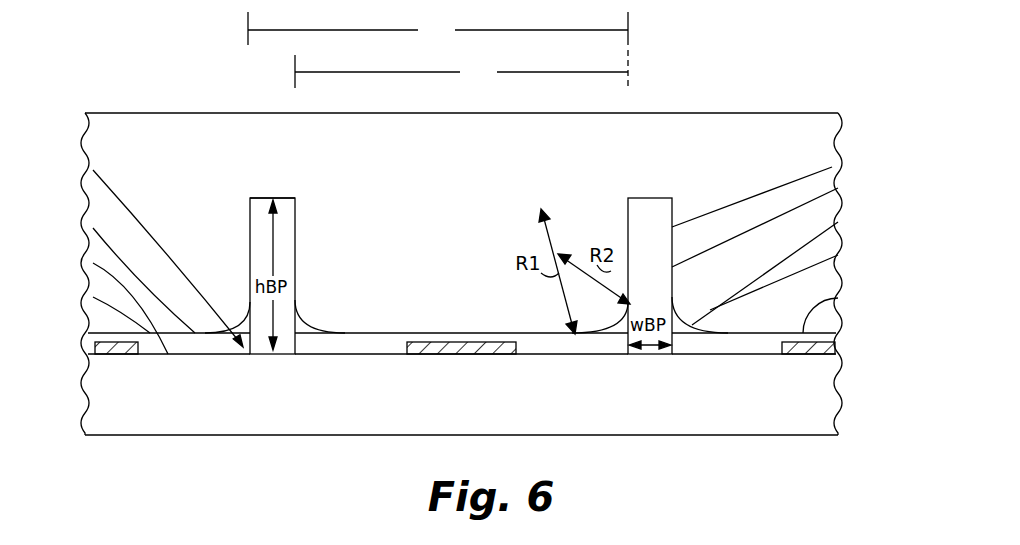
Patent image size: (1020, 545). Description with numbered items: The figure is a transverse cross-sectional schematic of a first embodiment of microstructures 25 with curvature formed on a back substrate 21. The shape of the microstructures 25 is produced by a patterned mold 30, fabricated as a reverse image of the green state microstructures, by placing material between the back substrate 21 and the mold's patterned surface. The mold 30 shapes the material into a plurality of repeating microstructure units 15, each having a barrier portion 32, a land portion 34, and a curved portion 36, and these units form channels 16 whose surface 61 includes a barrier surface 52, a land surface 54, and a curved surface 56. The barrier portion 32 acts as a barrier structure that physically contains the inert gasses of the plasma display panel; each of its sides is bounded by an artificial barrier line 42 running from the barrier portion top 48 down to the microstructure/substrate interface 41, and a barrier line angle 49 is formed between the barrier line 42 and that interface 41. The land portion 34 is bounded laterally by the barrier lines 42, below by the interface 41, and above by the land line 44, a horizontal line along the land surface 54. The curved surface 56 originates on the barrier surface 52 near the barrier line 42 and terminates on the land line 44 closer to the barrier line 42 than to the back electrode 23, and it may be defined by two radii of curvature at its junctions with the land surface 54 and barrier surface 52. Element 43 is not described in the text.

The repeating microstructure unit 15 is at (438, 50).
The channel 16 is at (461, 71).
The back substrate 21 is at (641, 428).
The back electrode 23 is at (415, 346).
The microstructure 25 is at (262, 247).
The patterned mold 30 is at (752, 130).
The barrier portion 32 is at (838, 188).
The land portion 34 is at (385, 345).
The curved portion 36 is at (838, 253).
The microstructure/substrate interface 41 is at (92, 297).
The barrier line 42 is at (840, 216).
The middle layer 43 is at (92, 265).
The land line 44 is at (303, 317).
The barrier portion top 48 is at (270, 198).
The barrier line angle 49 is at (92, 226).
The barrier surface 52 is at (832, 167).
The land surface 54 is at (840, 298).
The curved surface 56 is at (93, 170).
The surface 61 is at (628, 228).